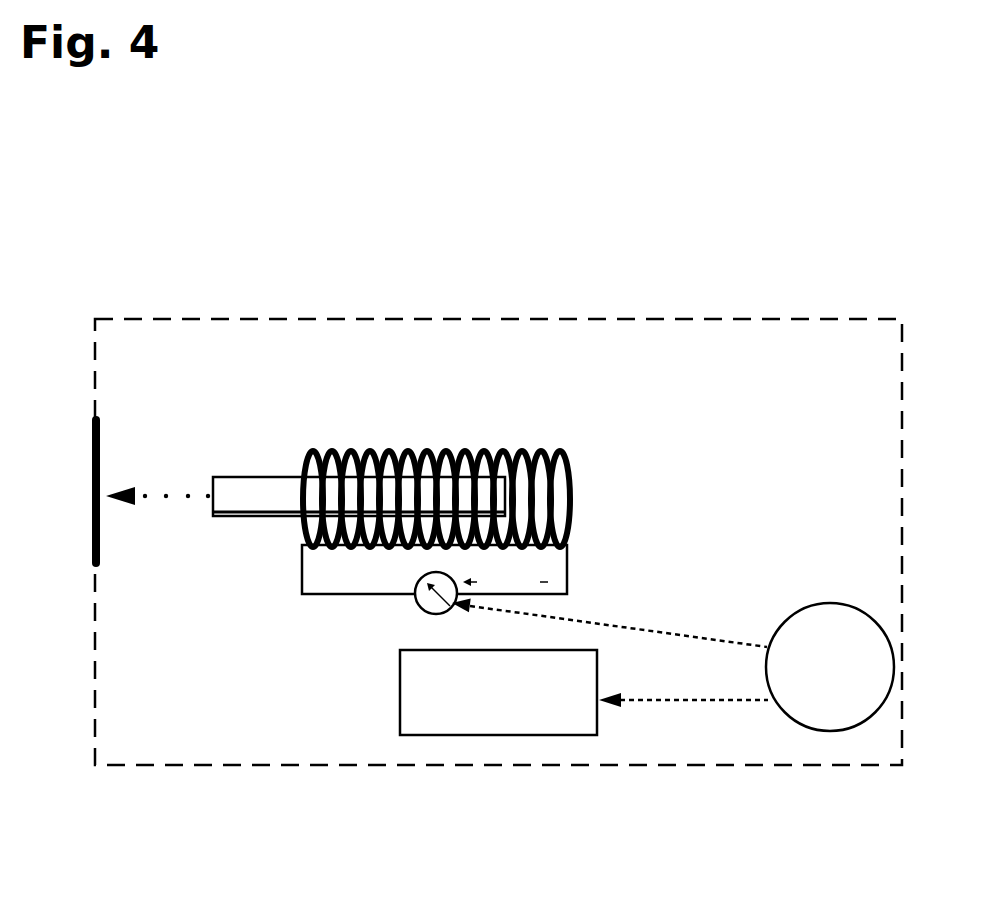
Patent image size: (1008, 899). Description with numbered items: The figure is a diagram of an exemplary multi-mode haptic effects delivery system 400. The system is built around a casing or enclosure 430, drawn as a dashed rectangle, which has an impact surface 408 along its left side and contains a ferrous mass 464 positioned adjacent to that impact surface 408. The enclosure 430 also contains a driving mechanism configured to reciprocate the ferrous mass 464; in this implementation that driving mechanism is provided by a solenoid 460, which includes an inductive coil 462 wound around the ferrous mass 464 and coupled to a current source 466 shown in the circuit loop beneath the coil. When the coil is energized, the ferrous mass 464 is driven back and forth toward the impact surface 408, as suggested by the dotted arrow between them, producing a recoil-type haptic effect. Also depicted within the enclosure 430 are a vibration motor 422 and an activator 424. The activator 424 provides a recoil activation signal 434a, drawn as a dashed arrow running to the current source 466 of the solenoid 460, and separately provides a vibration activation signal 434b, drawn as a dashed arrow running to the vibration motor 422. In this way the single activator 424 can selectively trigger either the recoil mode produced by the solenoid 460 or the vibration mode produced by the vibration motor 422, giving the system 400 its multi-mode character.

The multi-mode haptic effects delivery system 400 is at (804, 265).
The enclosure 430 is at (262, 318).
The impact surface 408 is at (100, 540).
The solenoid 460 is at (373, 513).
The inductive coil 462 is at (568, 459).
The ferrous mass 464 is at (251, 518).
The current source 466 is at (418, 606).
The recoil activation signal 434a is at (668, 634).
The vibration activation signal 434b is at (683, 702).
The vibration motor 422 is at (498, 692).
The activator 424 is at (826, 601).